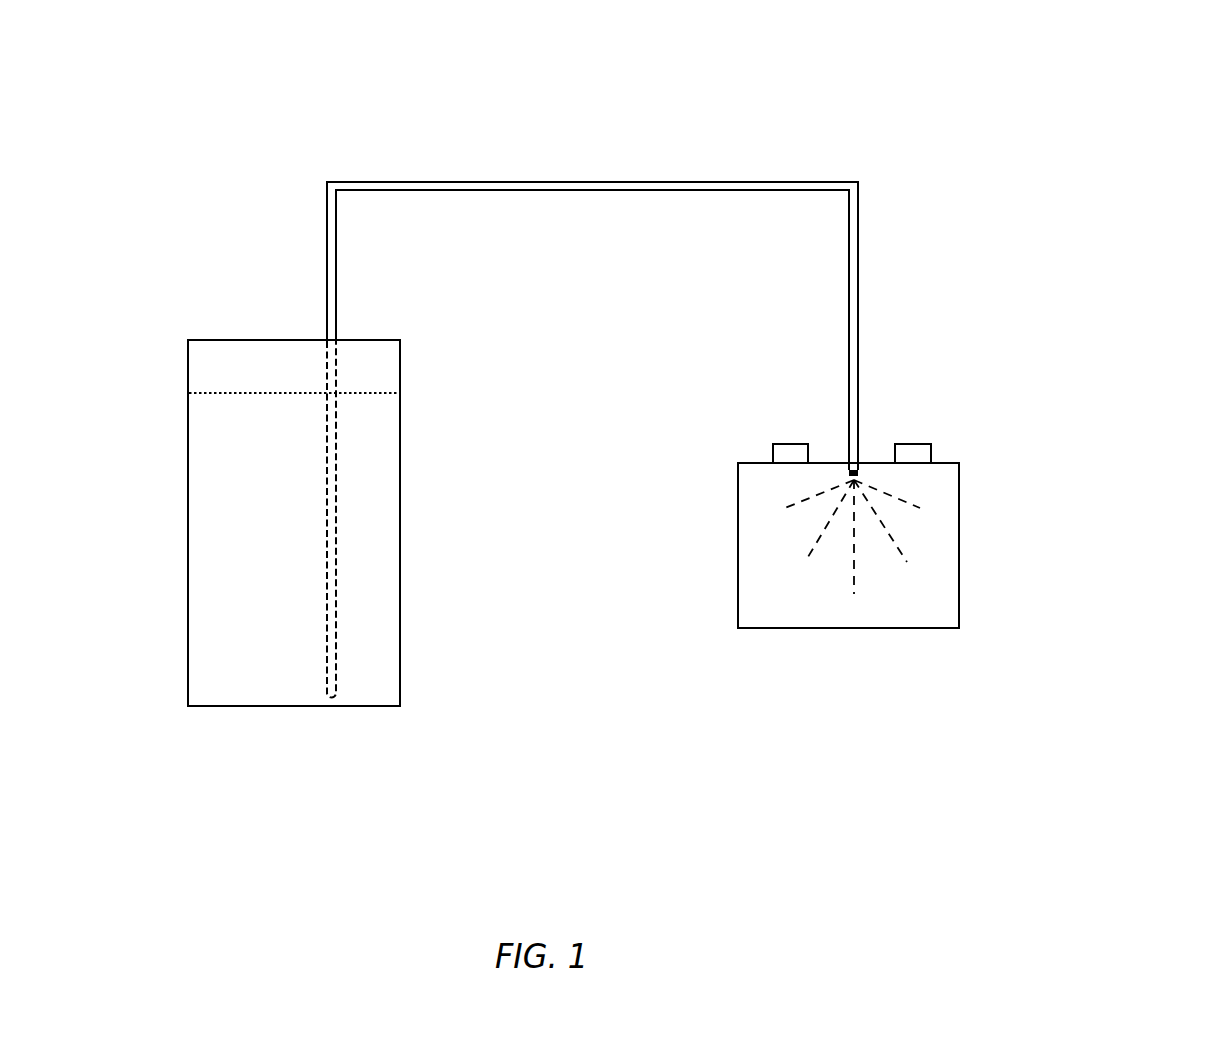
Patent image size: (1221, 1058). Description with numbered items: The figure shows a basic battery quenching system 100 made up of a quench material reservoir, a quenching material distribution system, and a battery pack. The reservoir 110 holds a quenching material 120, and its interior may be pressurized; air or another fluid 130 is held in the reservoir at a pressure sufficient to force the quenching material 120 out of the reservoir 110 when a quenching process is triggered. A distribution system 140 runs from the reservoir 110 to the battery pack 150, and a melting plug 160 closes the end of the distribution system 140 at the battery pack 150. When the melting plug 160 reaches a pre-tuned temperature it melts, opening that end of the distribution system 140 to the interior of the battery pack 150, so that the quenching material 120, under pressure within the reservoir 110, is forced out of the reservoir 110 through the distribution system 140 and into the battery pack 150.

The system 100 is at (1121, 82).
The reservoir 110 is at (187, 339).
The quenching material 120 is at (233, 552).
The fluid 130 is at (355, 362).
The distribution system 140 is at (598, 190).
The battery pack 150 is at (745, 462).
The melting plug 160 is at (858, 473).